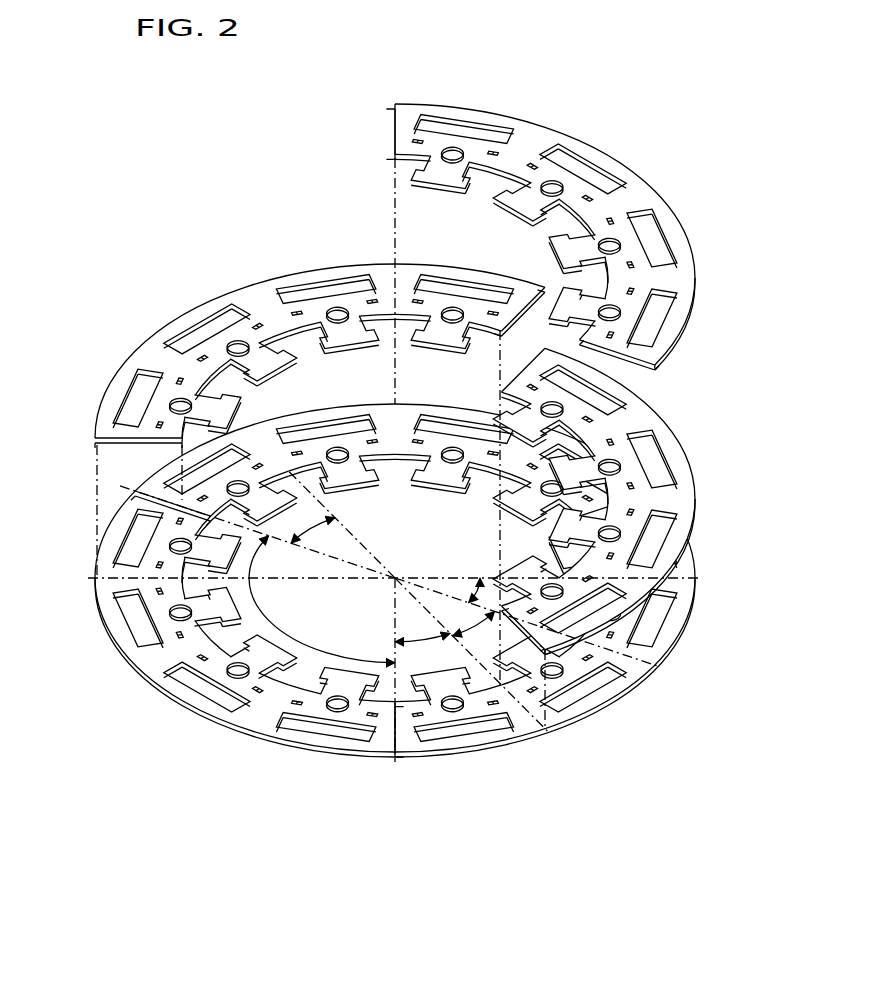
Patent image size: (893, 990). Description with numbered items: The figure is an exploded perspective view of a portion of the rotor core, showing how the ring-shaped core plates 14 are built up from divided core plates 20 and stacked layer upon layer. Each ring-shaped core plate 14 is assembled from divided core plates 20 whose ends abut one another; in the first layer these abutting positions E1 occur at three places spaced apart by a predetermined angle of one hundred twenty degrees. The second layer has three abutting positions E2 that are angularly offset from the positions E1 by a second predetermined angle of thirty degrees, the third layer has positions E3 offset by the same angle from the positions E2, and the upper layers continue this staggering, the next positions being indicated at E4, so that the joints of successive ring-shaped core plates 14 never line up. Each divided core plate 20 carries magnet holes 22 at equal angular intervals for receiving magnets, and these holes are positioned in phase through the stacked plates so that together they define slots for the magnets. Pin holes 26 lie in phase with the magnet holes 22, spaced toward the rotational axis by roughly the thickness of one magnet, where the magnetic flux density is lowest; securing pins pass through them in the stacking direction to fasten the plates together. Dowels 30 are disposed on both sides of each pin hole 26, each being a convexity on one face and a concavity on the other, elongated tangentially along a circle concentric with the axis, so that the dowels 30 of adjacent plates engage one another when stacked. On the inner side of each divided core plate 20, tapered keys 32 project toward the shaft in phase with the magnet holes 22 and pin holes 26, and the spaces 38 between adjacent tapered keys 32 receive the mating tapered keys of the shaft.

The ring-shaped core plate 14 is at (163, 689).
The divided core plate 20 is at (405, 128).
The magnet hole 22 is at (660, 220).
The pin hole 26 is at (557, 180).
The dowel 30 is at (583, 193).
The tapered key 32 is at (442, 170).
The space 38 is at (565, 222).
The abutting position of the first layer E1 is at (133, 490).
The abutting position of the second layer E2 is at (555, 742).
The abutting position of the third layer E3 is at (660, 668).
The segment end E4 is at (699, 580).